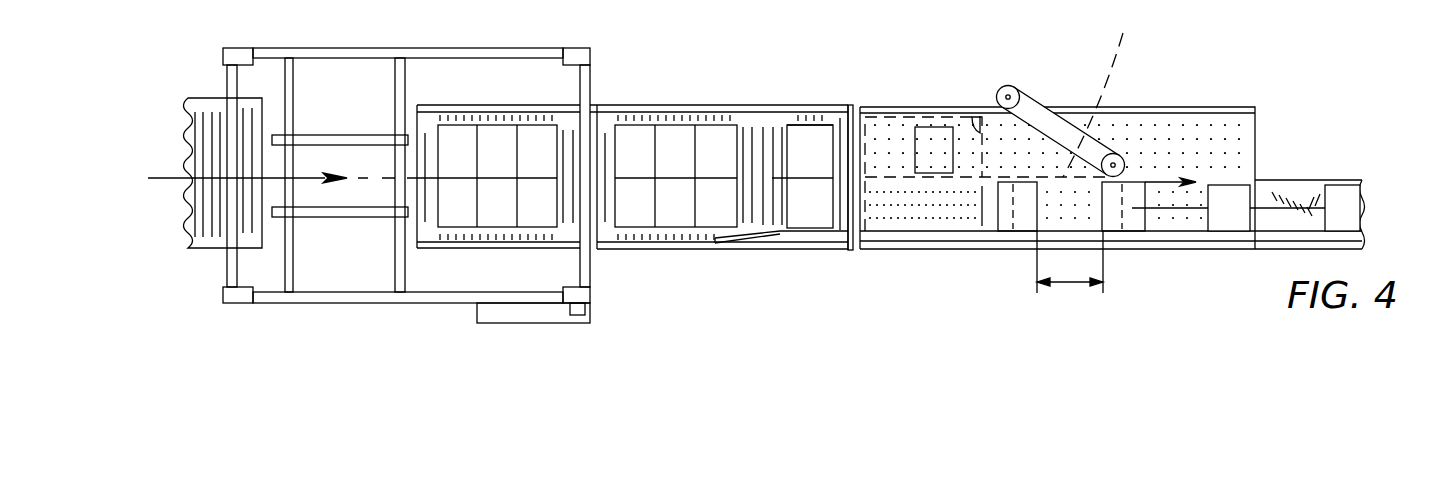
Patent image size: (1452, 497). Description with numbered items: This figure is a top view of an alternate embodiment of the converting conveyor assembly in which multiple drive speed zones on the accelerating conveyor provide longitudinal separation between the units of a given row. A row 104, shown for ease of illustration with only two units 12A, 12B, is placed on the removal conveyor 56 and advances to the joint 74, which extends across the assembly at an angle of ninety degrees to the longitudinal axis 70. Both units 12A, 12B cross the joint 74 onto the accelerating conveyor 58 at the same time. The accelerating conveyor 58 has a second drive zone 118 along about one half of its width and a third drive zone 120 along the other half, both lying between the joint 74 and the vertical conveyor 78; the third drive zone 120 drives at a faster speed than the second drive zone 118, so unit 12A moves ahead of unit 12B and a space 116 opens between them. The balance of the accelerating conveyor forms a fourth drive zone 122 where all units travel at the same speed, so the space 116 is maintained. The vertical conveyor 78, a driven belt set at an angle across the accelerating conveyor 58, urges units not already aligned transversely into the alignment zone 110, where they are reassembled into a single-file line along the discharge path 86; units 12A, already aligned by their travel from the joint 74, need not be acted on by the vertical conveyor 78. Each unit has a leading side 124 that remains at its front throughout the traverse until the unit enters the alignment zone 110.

The removal conveyor 56 is at (618, 105).
The unit of material 12A is at (817, 207).
The unit of material 12B is at (813, 147).
The row 104 is at (803, 120).
The joint 74 is at (853, 105).
The accelerating conveyor 58 is at (1148, 107).
The second drive zone 118 is at (977, 135).
The fourth drive zone 122 is at (1027, 143).
The vertical conveyor 78 is at (1030, 90).
The alignment zone 110 is at (1116, 95).
The longitudinal axis 70 is at (1165, 180).
The discharge path 86 is at (1188, 217).
The third drive zone 120 is at (978, 210).
The space 116 is at (1070, 283).
The leading side 124 is at (557, 210).